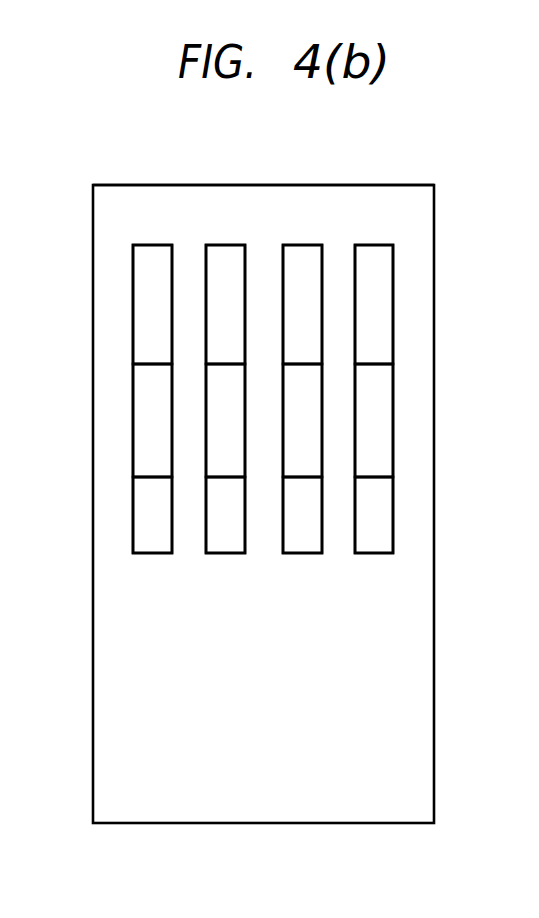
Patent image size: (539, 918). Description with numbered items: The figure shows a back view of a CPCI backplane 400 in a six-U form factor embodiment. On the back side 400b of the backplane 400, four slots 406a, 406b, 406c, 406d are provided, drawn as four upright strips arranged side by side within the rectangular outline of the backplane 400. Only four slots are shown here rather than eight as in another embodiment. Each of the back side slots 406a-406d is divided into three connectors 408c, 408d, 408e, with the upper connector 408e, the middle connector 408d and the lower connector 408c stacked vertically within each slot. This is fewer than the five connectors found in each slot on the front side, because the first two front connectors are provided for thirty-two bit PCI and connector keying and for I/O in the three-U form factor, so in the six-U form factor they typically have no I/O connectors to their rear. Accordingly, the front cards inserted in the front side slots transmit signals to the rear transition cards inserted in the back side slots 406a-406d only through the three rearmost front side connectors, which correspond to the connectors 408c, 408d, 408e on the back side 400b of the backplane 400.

The backplane 400 is at (167, 185).
The back side 400b is at (283, 185).
The slot 406a is at (375, 532).
The slot 406b is at (303, 532).
The slot 406c is at (224, 532).
The slot 406d is at (151, 532).
The connector 408c is at (215, 529).
The connector 408d is at (218, 383).
The connector 408e is at (218, 267).